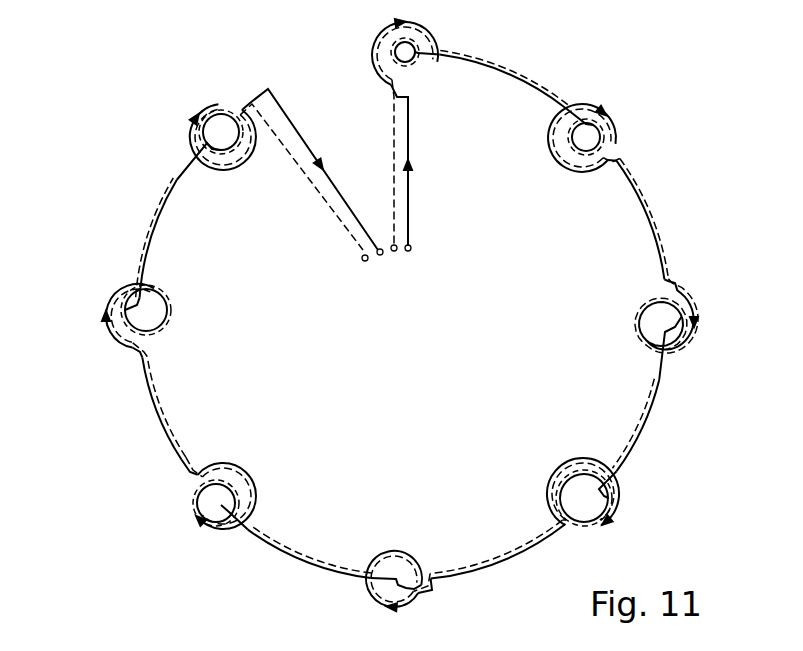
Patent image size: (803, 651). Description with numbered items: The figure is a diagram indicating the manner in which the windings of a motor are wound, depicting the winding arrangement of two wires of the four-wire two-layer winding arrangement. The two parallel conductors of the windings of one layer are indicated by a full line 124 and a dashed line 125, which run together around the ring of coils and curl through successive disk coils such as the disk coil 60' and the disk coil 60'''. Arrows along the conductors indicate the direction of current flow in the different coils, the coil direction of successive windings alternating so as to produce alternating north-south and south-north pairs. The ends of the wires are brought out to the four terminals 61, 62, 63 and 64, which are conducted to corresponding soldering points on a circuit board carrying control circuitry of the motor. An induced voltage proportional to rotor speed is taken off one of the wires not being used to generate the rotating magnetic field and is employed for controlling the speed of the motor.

The disk coil 60' is at (117, 302).
The disk coil 60''' is at (216, 113).
The terminal 61 is at (362, 262).
The terminal 62 is at (382, 256).
The terminal 63 is at (397, 252).
The terminal 64 is at (411, 252).
The full line 124 is at (518, 83).
The dashed line 125 is at (557, 97).